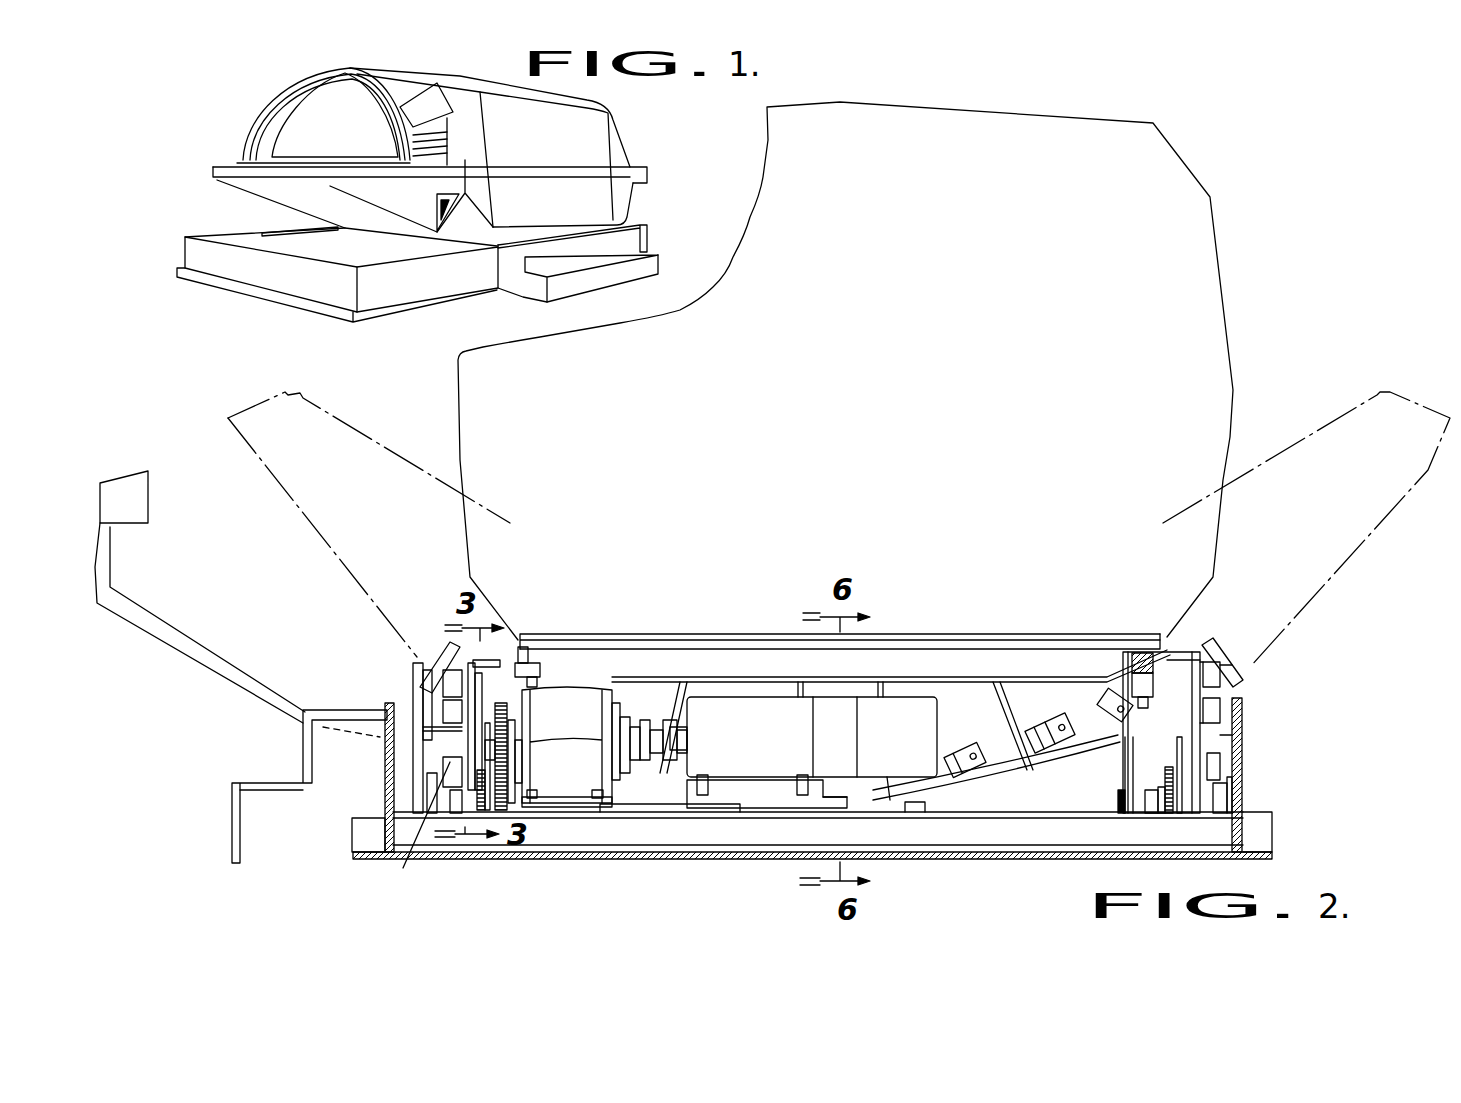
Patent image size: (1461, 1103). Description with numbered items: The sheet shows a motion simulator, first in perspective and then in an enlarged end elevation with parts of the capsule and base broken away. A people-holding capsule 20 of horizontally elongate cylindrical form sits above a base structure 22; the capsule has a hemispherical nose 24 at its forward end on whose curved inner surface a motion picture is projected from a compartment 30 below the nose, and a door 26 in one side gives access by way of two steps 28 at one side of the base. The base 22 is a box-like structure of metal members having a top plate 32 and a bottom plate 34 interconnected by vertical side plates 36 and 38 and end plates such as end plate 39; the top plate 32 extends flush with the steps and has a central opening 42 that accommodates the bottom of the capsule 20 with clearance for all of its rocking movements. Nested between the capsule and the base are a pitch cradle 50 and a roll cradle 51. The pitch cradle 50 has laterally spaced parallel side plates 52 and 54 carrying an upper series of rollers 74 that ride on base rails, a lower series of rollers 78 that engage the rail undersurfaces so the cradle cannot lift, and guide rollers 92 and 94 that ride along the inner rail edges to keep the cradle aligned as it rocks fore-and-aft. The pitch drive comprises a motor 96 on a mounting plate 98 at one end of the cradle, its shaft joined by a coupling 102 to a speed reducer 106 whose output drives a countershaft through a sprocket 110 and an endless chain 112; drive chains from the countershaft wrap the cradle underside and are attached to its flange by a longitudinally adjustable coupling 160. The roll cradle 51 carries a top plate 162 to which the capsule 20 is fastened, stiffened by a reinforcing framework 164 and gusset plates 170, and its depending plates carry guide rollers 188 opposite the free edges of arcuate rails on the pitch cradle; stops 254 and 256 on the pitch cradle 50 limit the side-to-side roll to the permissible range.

In FIG. 1, the people-holding capsule 20 is at (404, 66).
In FIG. 1, the base structure 22 is at (178, 260).
In FIG. 1, the hemispherical nose 24 is at (266, 105).
In FIG. 1, the door 26 is at (588, 110).
In FIG. 1, the steps 28 is at (660, 245).
In FIG. 2, the steps 28 is at (283, 733).
In FIG. 1, the compartment 30 is at (330, 211).
In FIG. 1, the top plate 32 is at (225, 237).
In FIG. 2, the top plate 32 is at (740, 820).
In FIG. 2, the bottom plate 34 is at (660, 860).
In FIG. 1, the side plate 36 is at (398, 290).
In FIG. 2, the side plate 36 is at (413, 665).
In FIG. 2, the side plate 38 is at (1242, 757).
In FIG. 1, the end plate 39 is at (258, 285).
In FIG. 1, the central opening 42 is at (307, 227).
In FIG. 2, the pitch cradle 50 is at (1113, 769).
In FIG. 2, the roll cradle 51 is at (680, 628).
In FIG. 2, the side plate 52 is at (515, 638).
In FIG. 2, the side plate 54 is at (1185, 722).
In FIG. 2, the rollers 74 is at (443, 708).
In FIG. 2, the rollers 78 is at (1280, 772).
In FIG. 2, the guide rollers 92 is at (453, 742).
In FIG. 2, the guide rollers 94 is at (1220, 727).
In FIG. 2, the motor 96 is at (775, 754).
In FIG. 2, the mounting plate 98 is at (912, 810).
In FIG. 2, the coupling 102 is at (680, 727).
In FIG. 2, the speed reducer 106 is at (580, 724).
In FIG. 2, the sprocket 110 is at (512, 763).
In FIG. 2, the endless chain 112 is at (510, 783).
In FIG. 2, the longitudinally adjustable coupling 160 is at (540, 678).
In FIG. 2, the top plate 162 is at (897, 633).
In FIG. 2, the reinforcing framework 164 is at (953, 653).
In FIG. 2, the gusset plates 170 is at (1010, 693).
In FIG. 2, the guide rollers 188 is at (967, 747).
In FIG. 2, the stop 254 is at (440, 647).
In FIG. 2, the stop 256 is at (1223, 667).